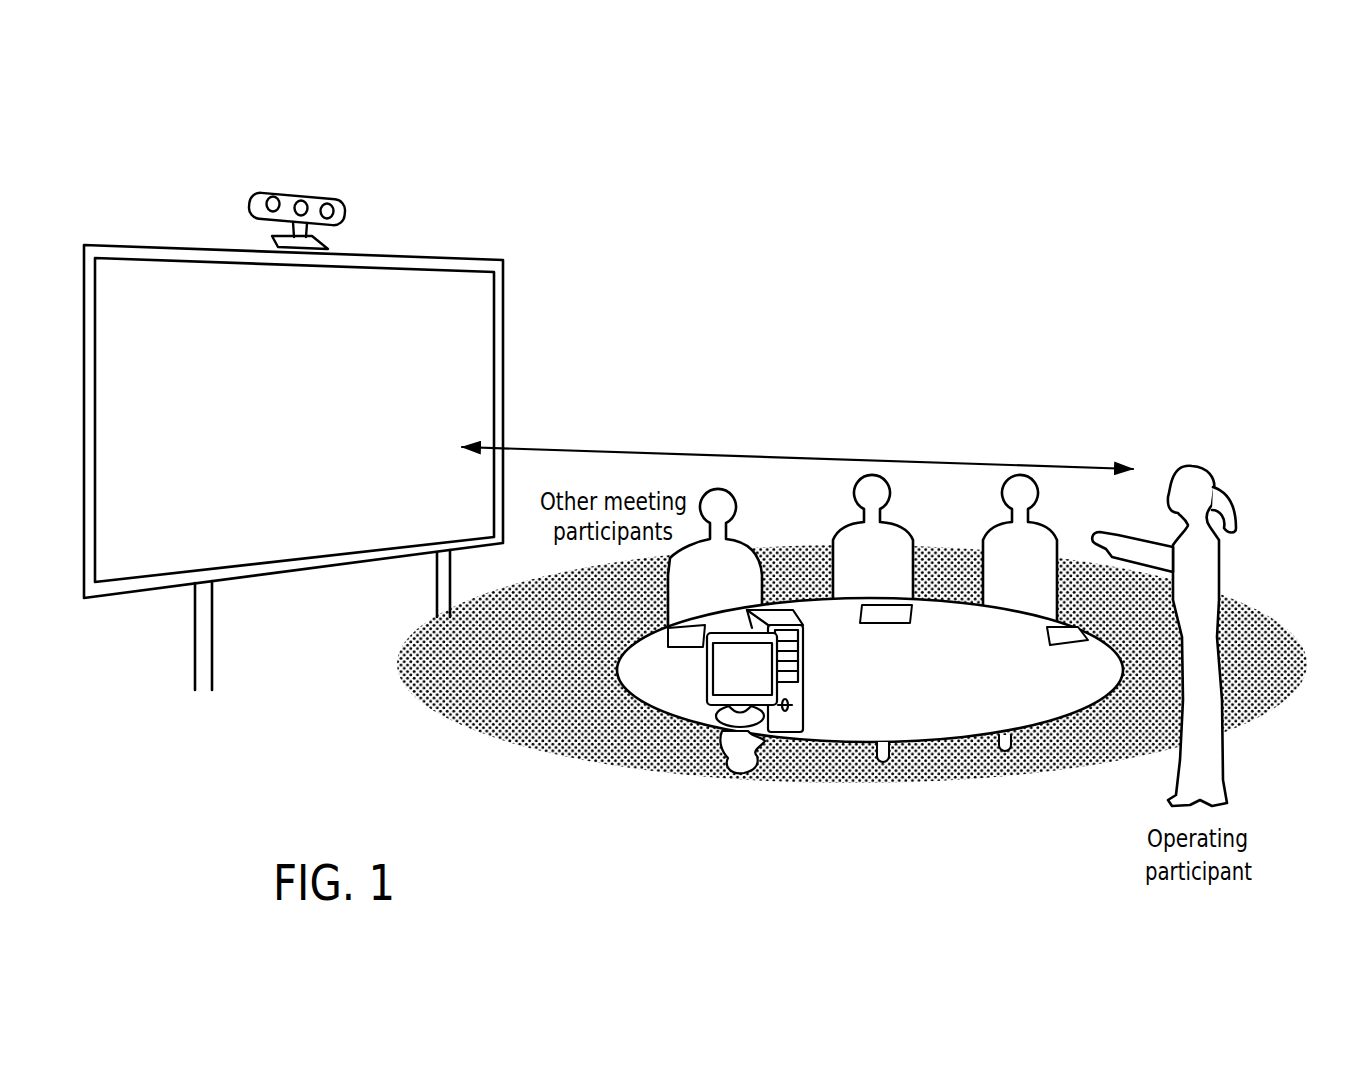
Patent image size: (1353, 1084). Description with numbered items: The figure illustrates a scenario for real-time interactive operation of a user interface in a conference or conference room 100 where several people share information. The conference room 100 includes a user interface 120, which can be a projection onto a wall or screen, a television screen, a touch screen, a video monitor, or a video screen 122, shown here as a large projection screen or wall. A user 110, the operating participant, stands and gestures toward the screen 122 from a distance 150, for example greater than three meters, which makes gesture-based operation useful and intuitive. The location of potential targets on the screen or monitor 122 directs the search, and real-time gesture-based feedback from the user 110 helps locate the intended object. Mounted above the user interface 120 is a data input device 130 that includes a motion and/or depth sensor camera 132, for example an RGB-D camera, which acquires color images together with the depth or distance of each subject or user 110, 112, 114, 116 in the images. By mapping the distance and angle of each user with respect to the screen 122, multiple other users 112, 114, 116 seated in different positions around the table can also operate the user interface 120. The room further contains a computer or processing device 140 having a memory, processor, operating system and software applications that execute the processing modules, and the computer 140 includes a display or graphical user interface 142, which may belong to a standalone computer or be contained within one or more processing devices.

The conference 100 is at (1122, 329).
The user 110 is at (1230, 565).
The user 112 is at (1038, 543).
The user 114 is at (895, 537).
The user 116 is at (740, 548).
The user interface 120 is at (336, 467).
The screen 122 is at (472, 332).
The data input device 130 is at (317, 177).
The motion and/or depth sensor camera 132 is at (276, 197).
The computer or processing device 140 is at (793, 722).
The display 142 is at (743, 670).
The distance 150 is at (969, 462).